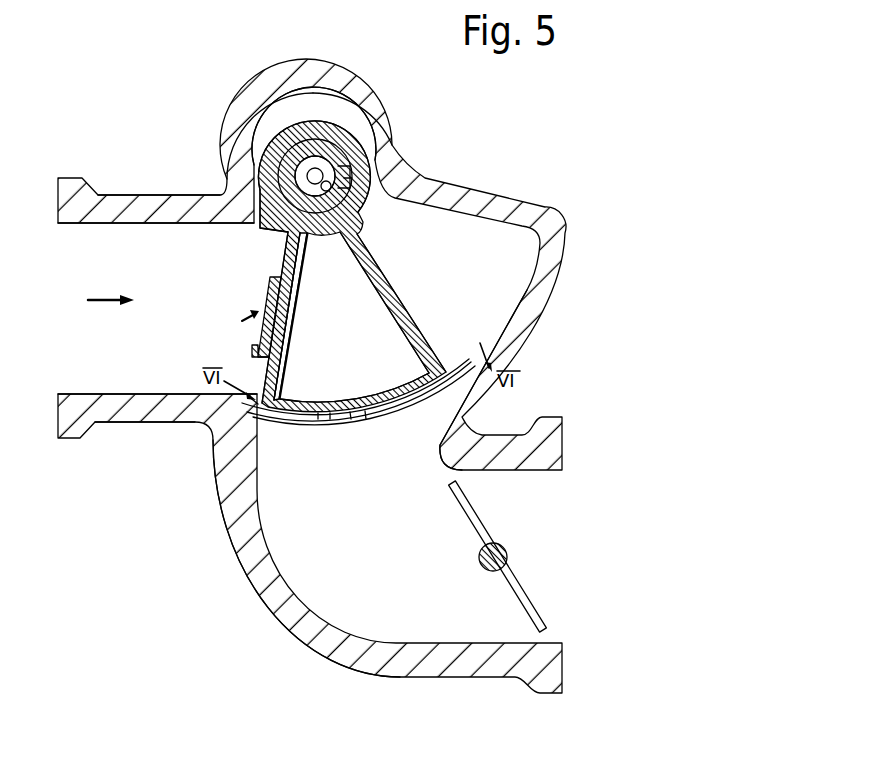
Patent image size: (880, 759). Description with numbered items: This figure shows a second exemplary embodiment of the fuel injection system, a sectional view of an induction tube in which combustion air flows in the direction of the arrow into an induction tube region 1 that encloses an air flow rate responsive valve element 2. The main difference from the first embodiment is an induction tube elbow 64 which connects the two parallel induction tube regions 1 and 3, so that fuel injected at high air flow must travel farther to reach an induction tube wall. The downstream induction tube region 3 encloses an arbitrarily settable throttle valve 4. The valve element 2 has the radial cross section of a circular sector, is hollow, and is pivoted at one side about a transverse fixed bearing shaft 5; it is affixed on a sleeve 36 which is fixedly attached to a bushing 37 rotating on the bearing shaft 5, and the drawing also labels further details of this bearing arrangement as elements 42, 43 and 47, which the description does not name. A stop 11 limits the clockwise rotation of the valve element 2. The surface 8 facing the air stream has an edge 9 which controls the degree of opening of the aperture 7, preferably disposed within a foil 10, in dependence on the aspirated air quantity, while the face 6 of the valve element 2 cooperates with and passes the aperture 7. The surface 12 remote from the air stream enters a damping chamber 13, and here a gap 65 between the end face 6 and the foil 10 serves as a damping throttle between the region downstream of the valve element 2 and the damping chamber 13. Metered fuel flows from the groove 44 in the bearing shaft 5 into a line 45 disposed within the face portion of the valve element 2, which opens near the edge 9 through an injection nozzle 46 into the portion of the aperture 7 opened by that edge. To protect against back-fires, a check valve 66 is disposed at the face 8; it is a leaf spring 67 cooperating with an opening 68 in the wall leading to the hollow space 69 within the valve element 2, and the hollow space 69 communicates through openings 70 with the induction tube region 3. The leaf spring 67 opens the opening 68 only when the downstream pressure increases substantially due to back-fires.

The region of the induction tube 1 is at (153, 247).
The valve element 2 is at (374, 340).
The region of the induction tube 3 is at (445, 607).
The throttle valve 4 is at (468, 505).
The bearing shaft 5 is at (262, 128).
The face of the valve element 6 is at (348, 433).
The aperture 7 is at (372, 420).
The surface of the valve element 8 is at (262, 359).
The edge 9 is at (253, 397).
The foil 10 is at (413, 420).
The stop 11 is at (265, 228).
The surface of the valve element 12 is at (387, 262).
The damping chamber 13 is at (490, 230).
The sleeve 36 is at (284, 103).
The bushing 37 is at (318, 97).
The bore 42 is at (385, 126).
The bushing 43 is at (356, 145).
The groove 44 is at (333, 124).
The line 45 is at (305, 260).
The injection nozzle 46 is at (258, 412).
The retaining clip 47 is at (352, 185).
The induction tube elbow 64 is at (245, 540).
The gap 65 is at (380, 423).
The check valve 66 is at (242, 321).
The leaf spring 67 is at (270, 300).
The opening 68 is at (296, 283).
The hollow space 69 is at (427, 330).
The openings 70 is at (345, 428).